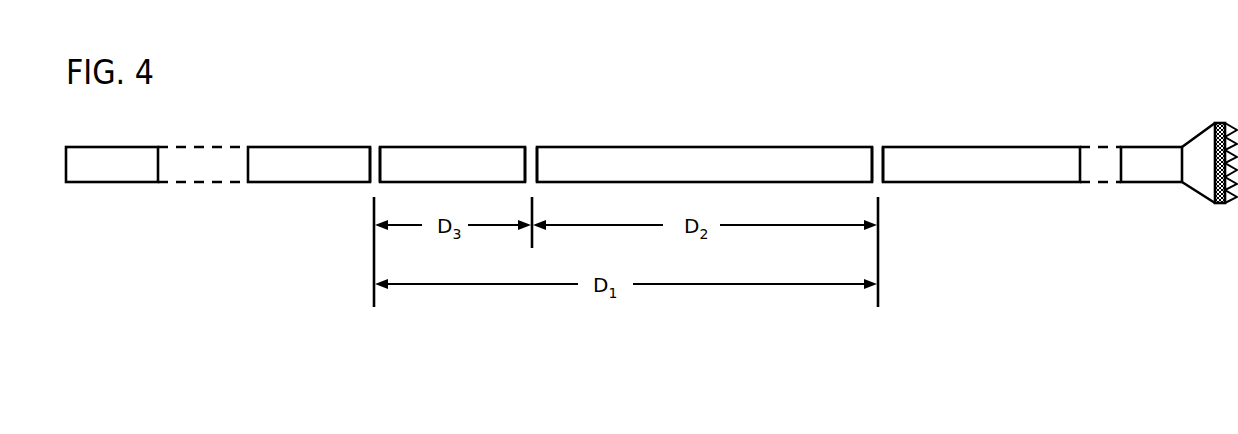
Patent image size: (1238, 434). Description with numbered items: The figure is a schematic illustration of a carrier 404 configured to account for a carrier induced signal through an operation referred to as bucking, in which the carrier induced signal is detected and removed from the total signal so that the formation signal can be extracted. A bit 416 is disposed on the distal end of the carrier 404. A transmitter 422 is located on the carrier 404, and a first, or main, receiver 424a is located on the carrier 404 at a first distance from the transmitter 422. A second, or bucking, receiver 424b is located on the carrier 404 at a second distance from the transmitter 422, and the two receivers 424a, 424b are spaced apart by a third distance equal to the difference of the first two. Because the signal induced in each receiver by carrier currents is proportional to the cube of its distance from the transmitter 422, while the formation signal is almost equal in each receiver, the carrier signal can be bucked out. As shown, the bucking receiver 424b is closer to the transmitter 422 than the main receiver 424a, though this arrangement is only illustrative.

The carrier 404 is at (960, 156).
The bit 416 is at (1203, 148).
The transmitter 422 is at (878, 160).
The first receiver 424a is at (375, 157).
The second receiver 424b is at (530, 157).